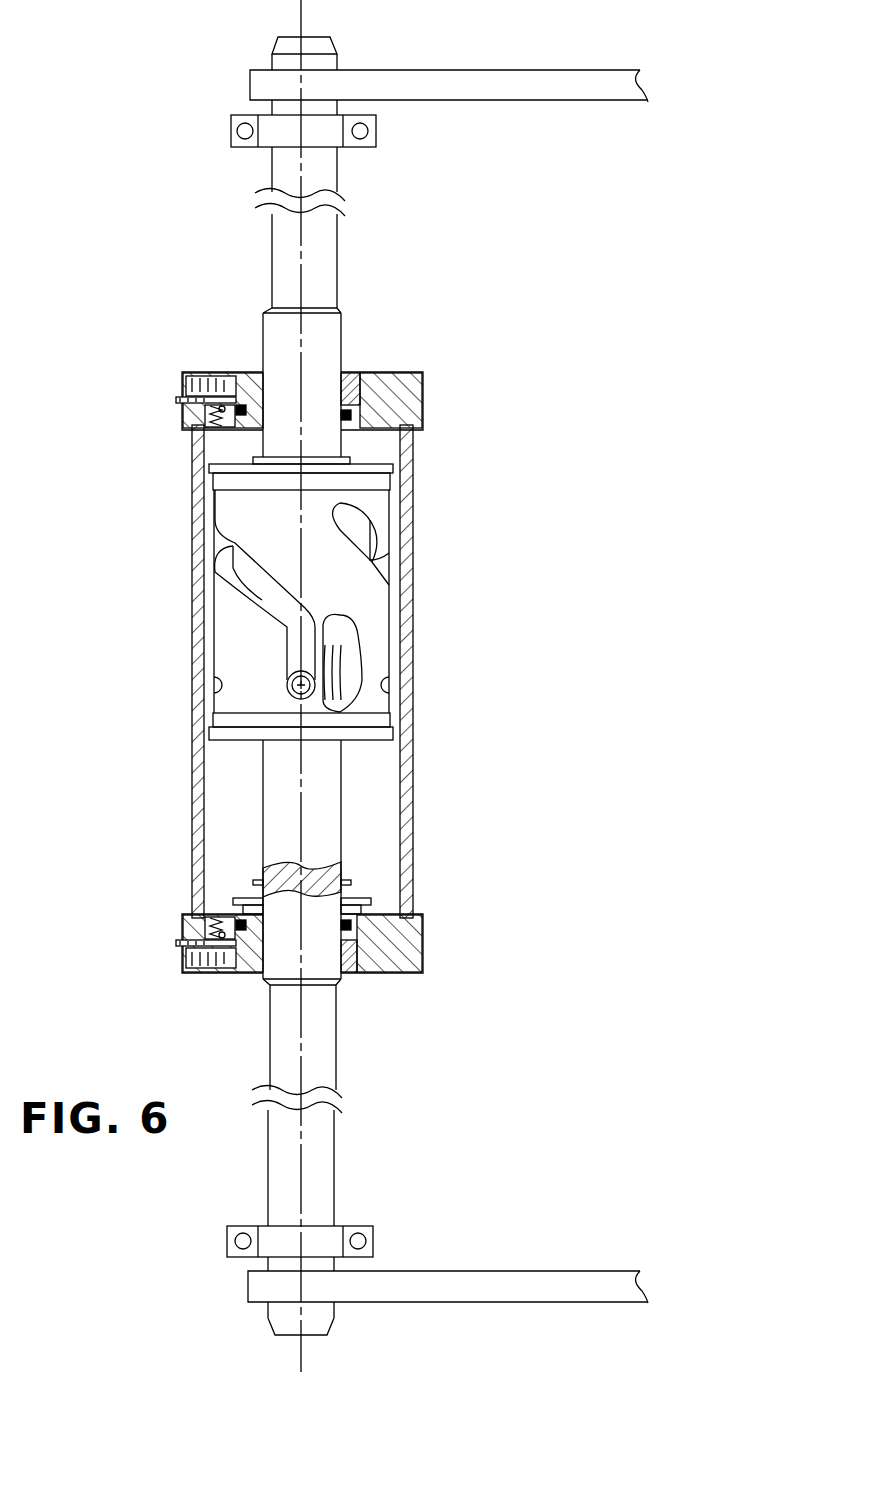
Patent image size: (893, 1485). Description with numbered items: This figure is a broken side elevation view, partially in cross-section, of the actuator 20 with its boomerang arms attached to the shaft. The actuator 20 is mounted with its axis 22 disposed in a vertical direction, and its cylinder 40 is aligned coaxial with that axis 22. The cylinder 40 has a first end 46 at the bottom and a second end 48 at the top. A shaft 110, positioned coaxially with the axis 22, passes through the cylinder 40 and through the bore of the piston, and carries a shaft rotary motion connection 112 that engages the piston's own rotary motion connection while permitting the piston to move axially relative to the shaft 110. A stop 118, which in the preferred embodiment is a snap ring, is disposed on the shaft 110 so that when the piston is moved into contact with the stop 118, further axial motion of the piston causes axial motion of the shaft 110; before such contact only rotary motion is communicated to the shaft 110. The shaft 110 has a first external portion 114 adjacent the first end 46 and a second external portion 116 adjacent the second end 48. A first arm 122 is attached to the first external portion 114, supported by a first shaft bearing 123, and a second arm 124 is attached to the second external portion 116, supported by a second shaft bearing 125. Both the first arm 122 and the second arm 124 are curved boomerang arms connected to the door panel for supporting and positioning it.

The actuator 20 is at (142, 509).
The axis 22 is at (302, 803).
The cylinder 40 is at (413, 567).
The first end 46 is at (415, 947).
The second end 48 is at (423, 398).
The shaft 110 is at (330, 334).
The shaft rotary motion connection 112 is at (343, 662).
The first external portion 114 is at (330, 1153).
The second external portion 116 is at (322, 171).
The stop 118 is at (352, 458).
The first arm 122 is at (518, 1280).
The first shaft bearing 123 is at (227, 1242).
The second arm 124 is at (546, 72).
The second shaft bearing 125 is at (231, 128).